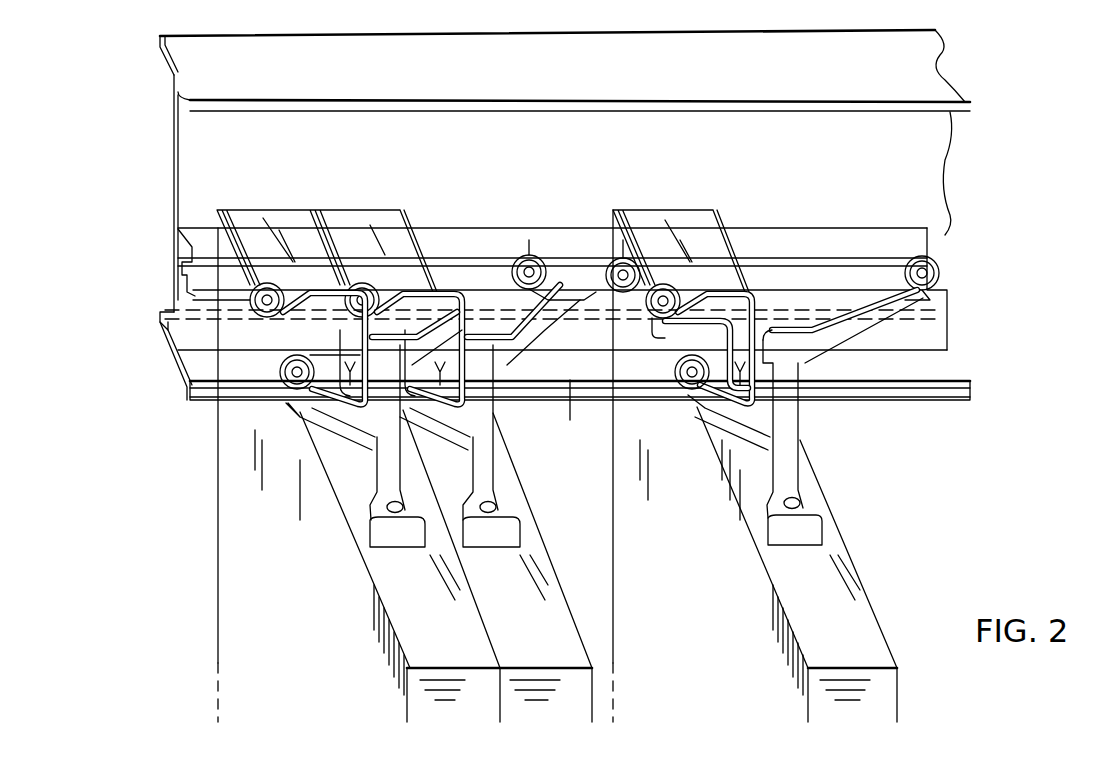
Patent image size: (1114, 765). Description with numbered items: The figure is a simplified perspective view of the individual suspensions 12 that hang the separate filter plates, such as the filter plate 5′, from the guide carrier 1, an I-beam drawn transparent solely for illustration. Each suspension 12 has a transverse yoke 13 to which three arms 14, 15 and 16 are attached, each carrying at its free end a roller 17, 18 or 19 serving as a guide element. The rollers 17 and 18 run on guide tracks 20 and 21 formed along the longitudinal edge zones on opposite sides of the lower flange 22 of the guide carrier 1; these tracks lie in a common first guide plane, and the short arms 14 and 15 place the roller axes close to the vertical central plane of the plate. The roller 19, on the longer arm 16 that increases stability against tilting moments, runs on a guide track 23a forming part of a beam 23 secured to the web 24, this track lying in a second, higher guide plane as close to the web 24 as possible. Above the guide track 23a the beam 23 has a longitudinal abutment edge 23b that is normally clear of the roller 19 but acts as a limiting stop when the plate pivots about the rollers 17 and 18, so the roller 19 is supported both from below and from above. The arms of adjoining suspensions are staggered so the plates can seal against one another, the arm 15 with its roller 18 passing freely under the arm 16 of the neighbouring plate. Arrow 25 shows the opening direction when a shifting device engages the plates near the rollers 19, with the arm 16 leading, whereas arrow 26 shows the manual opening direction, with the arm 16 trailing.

The guide carrier 1 is at (160, 125).
The suspension 12 is at (817, 410).
The transverse yoke 13 is at (812, 508).
The arm 14 is at (660, 325).
The arm 15 is at (698, 405).
The arm 16 is at (860, 327).
The roller 17 is at (667, 286).
The roller 18 is at (675, 388).
The roller 19 is at (920, 262).
The guide track 20 is at (168, 315).
The guide track 21 is at (198, 387).
The lower flange 22 is at (172, 352).
The beam 23 is at (200, 243).
The guide track 23a is at (450, 292).
The abutment edge 23b is at (790, 268).
The web 24 is at (185, 162).
The arrow 25 is at (870, 67).
The arrow 26 is at (803, 128).
The filter plate 5′ is at (850, 635).